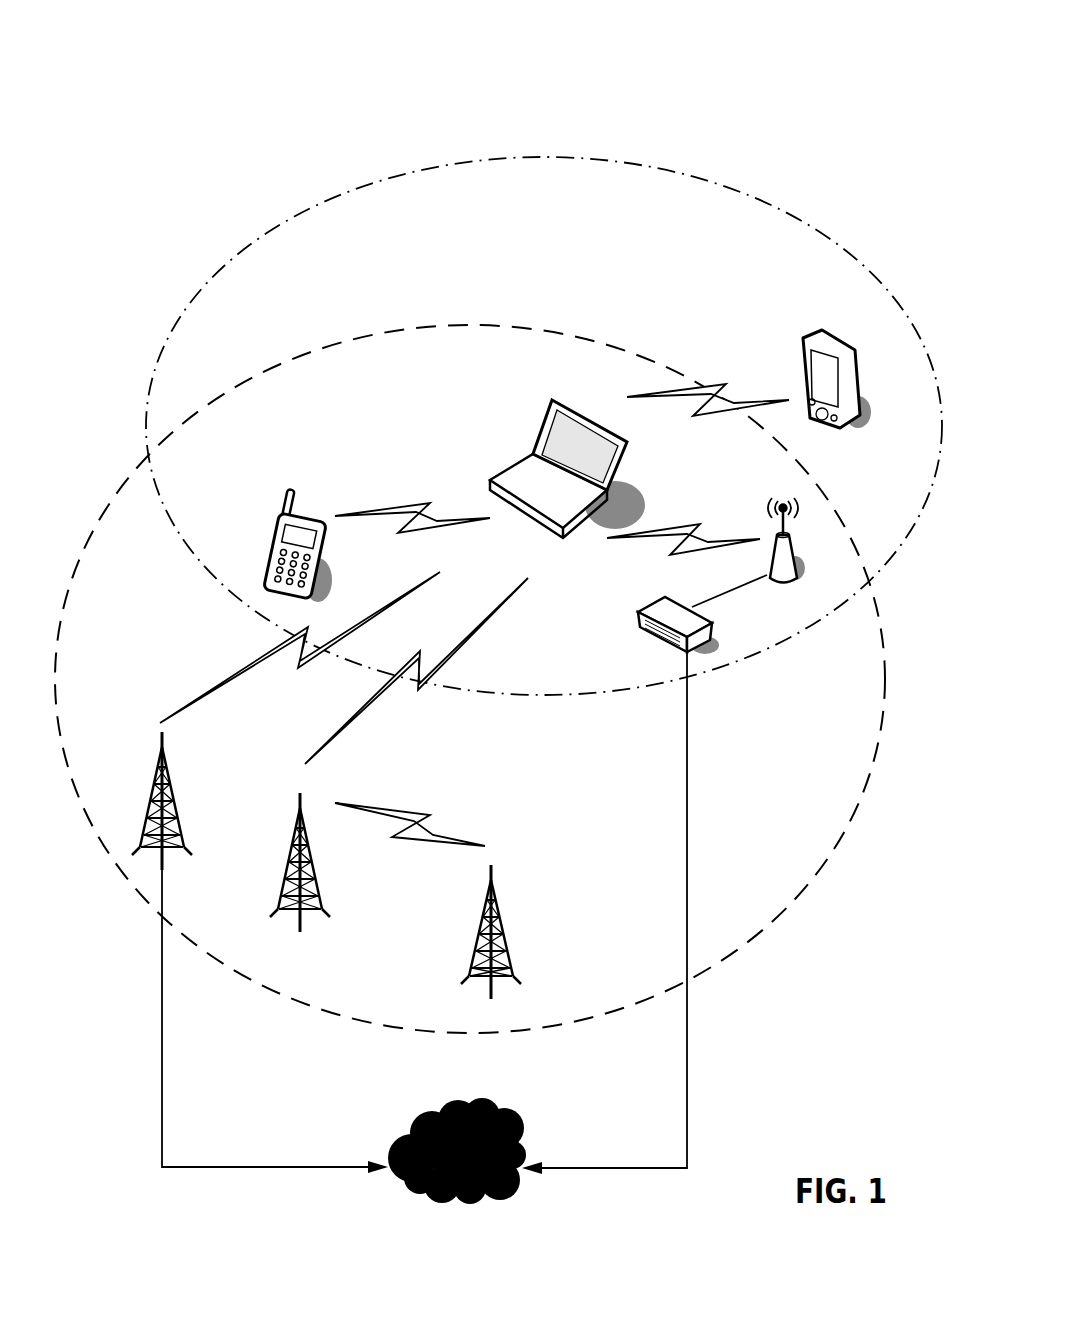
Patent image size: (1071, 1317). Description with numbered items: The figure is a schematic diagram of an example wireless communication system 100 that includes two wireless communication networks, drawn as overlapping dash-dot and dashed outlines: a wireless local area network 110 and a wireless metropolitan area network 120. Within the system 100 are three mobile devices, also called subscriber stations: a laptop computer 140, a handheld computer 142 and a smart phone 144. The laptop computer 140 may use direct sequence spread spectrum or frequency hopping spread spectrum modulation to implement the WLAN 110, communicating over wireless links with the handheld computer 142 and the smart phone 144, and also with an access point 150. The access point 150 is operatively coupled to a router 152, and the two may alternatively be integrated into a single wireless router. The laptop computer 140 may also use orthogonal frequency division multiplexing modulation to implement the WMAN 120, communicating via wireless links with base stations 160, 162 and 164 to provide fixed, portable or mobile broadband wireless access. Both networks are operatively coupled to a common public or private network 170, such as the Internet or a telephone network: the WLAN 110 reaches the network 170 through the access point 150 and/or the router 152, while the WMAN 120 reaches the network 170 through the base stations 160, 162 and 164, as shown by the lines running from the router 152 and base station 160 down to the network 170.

The wireless communication system 100 is at (119, 101).
The wireless local area network 110 is at (414, 175).
The wireless metropolitan area network 120 is at (810, 887).
The laptop computer 140 is at (554, 400).
The handheld computer 142 is at (807, 330).
The smart phone 144 is at (293, 512).
The access point 150 is at (797, 557).
The router 152 is at (640, 633).
The base station 160 is at (175, 795).
The base station 162 is at (328, 888).
The base station 164 is at (510, 935).
The common public or private network 170 is at (402, 1133).